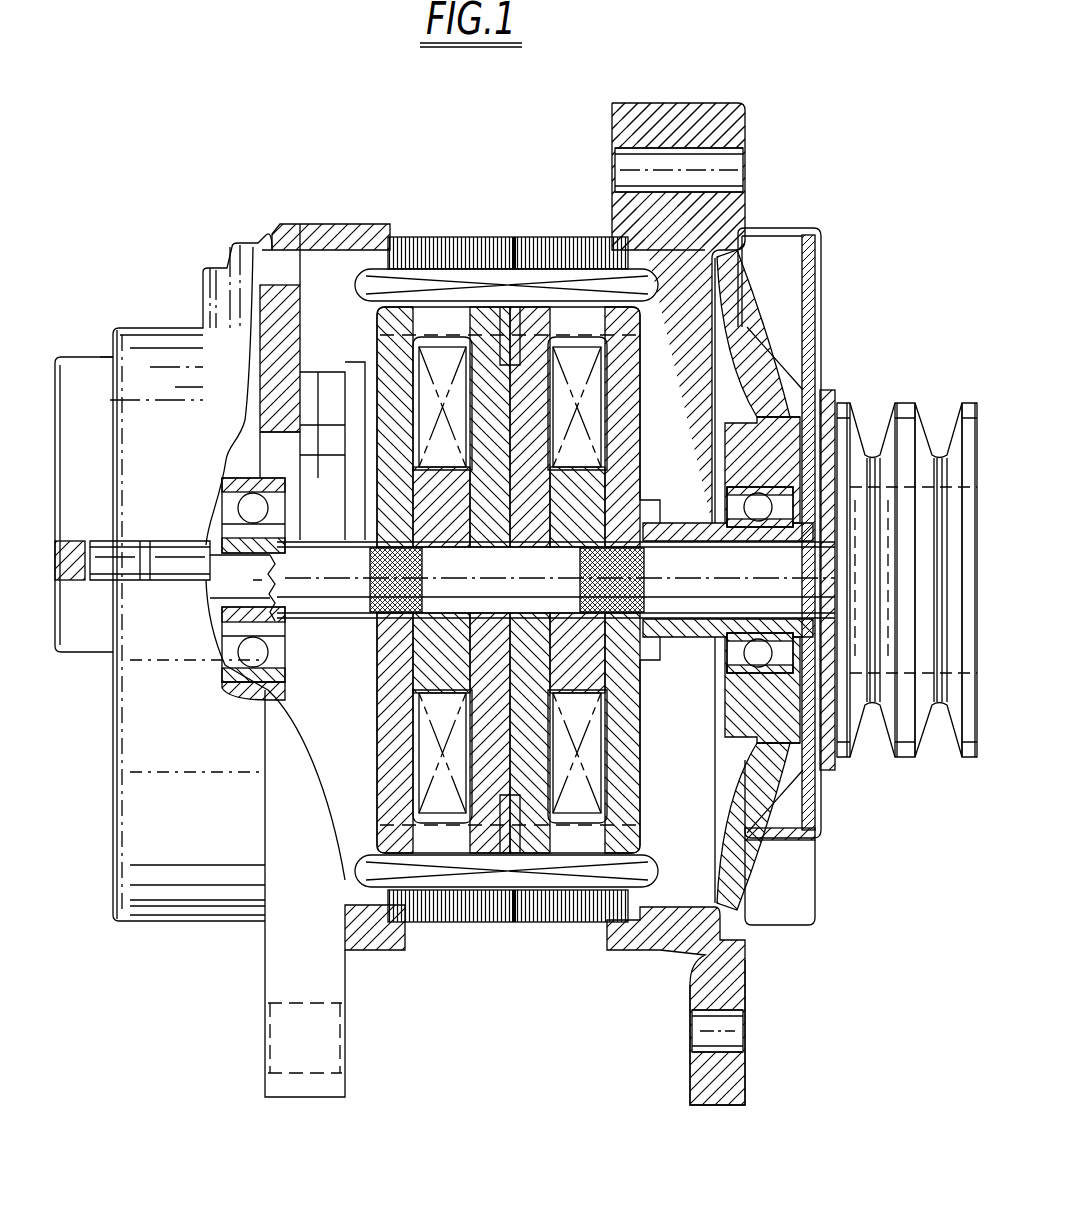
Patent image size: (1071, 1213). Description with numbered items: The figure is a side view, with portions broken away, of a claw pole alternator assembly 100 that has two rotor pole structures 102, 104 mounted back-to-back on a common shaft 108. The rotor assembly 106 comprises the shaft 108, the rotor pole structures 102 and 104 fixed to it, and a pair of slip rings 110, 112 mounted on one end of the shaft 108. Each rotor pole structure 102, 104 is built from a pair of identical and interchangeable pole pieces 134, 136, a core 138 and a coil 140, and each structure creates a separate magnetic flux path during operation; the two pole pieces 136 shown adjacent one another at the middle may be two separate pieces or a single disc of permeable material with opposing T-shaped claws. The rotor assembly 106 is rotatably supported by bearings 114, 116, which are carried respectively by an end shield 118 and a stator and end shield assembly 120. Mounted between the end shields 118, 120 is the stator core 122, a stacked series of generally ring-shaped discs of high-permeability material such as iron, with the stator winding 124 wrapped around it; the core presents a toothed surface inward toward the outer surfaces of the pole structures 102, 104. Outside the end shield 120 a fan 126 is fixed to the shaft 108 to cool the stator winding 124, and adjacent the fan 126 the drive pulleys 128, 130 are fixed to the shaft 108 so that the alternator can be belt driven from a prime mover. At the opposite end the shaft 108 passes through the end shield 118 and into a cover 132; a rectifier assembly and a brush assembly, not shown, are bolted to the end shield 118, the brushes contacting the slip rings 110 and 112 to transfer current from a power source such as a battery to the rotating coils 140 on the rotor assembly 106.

The claw pole alternator assembly 100 is at (245, 146).
The rotor pole structure 102 is at (419, 570).
The rotor pole structure 104 is at (370, 336).
The rotor assembly 106 is at (657, 740).
The shaft 108 is at (537, 575).
The slip ring 110 is at (110, 543).
The slip ring 112 is at (180, 545).
The bearing 114 is at (222, 630).
The bearing 116 is at (777, 447).
The end shield 118 is at (345, 988).
The stator and end shield assembly 120 is at (730, 960).
The stator core 122 is at (473, 212).
The stator winding 124 is at (520, 278).
The fan 126 is at (818, 277).
The drive pulley 128 is at (888, 730).
The drive pulley 130 is at (950, 730).
The cover 132 is at (197, 915).
The pole piece 134 is at (632, 367).
The pole piece 136 is at (598, 440).
The core 138 is at (585, 490).
The coil 140 is at (578, 396).